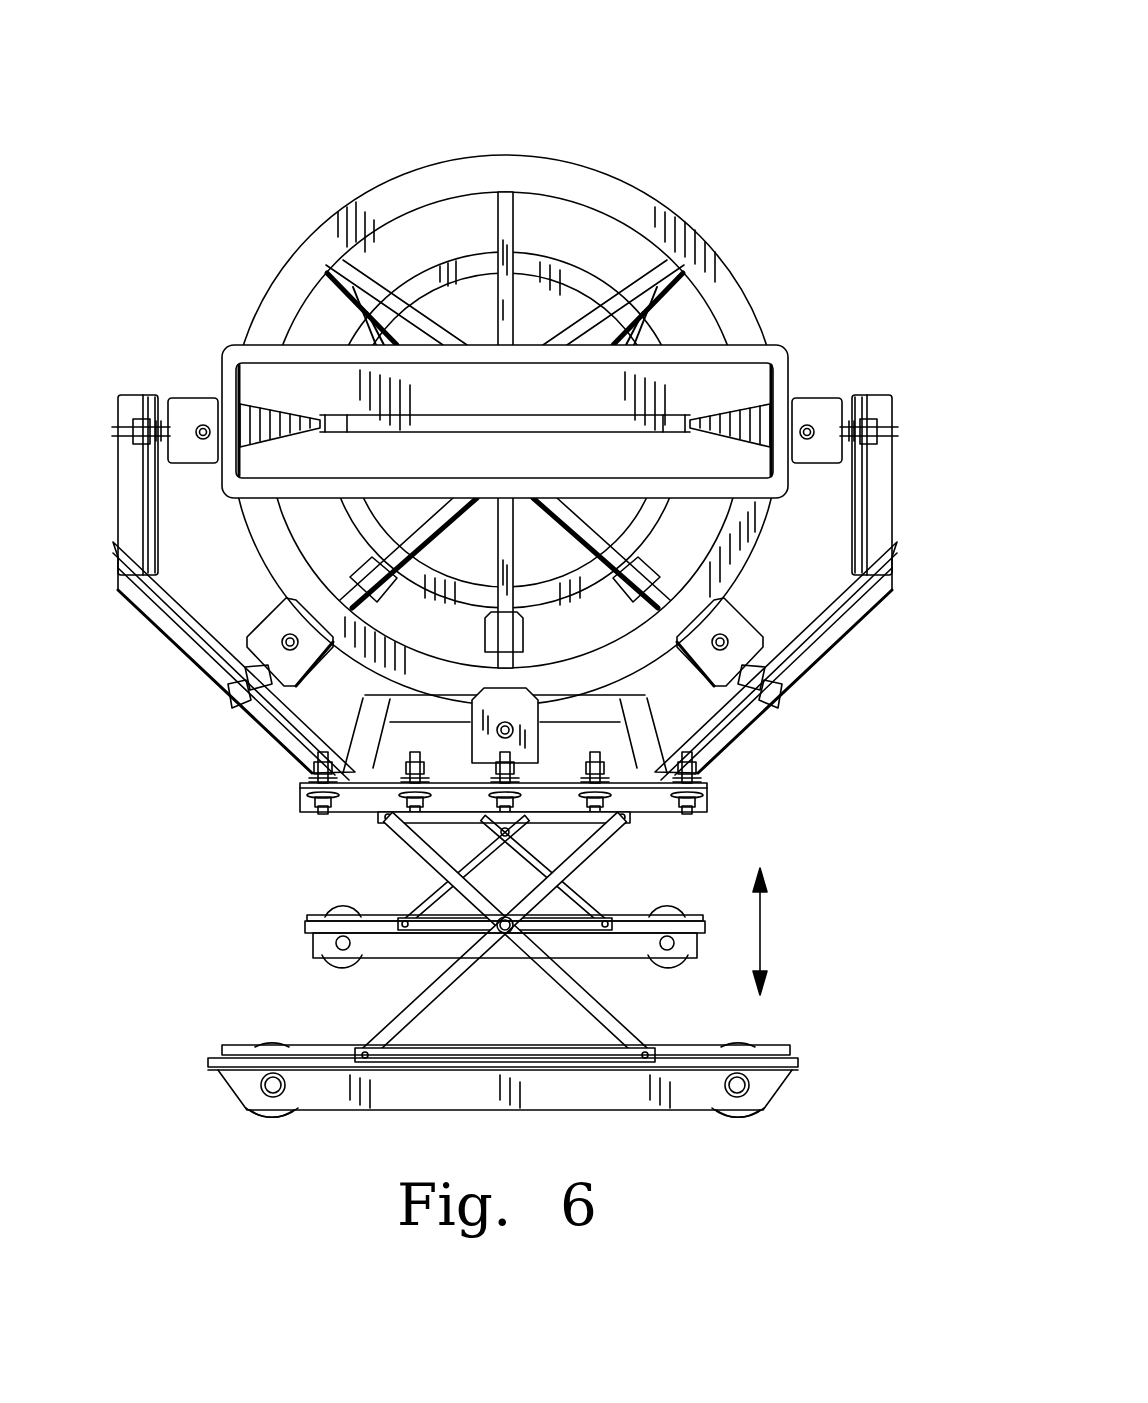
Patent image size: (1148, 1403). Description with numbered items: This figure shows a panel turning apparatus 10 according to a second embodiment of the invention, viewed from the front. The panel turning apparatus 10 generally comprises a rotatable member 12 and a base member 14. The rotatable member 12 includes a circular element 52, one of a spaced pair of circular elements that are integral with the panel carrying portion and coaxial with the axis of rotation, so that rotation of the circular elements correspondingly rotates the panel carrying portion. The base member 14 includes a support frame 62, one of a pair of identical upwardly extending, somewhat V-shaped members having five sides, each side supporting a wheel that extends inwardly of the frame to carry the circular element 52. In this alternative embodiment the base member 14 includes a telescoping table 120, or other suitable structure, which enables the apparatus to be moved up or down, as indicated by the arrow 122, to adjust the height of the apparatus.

The panel turning apparatus 10 is at (272, 104).
The rotatable member 12 is at (240, 305).
The base member 14 is at (165, 668).
The circular element 52 is at (622, 200).
The support frame 62 is at (815, 652).
The telescoping table 120 is at (380, 1000).
The arrow 122 is at (765, 932).